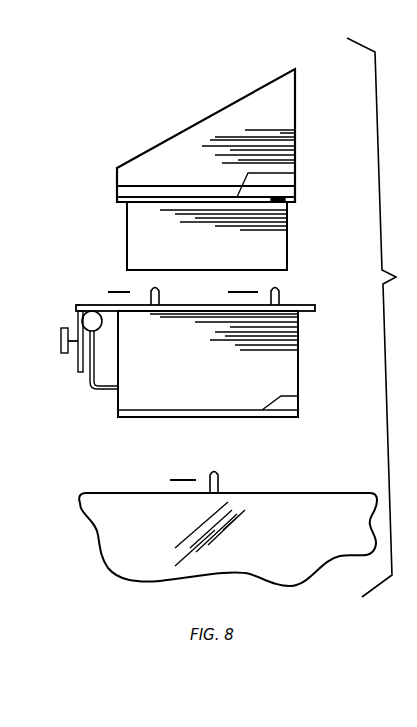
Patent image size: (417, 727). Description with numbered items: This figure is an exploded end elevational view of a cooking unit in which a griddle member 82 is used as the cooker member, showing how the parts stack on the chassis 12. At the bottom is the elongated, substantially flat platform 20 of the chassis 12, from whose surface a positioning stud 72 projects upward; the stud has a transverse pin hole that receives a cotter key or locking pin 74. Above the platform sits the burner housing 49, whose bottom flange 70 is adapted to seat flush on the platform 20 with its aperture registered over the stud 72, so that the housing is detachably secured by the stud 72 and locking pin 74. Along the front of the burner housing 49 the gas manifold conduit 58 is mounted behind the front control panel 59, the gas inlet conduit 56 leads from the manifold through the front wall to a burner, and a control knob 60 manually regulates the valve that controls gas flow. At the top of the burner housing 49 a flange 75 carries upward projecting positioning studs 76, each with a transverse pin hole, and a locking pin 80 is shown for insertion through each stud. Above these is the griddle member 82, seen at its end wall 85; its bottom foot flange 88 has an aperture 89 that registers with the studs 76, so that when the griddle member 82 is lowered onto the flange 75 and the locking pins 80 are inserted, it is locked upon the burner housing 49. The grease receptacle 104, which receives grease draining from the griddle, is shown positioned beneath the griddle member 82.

The chassis 12 is at (317, 545).
The platform 20 is at (300, 493).
The burner housing 49 is at (303, 373).
The gas inlet conduit 56 is at (90, 386).
The gas manifold conduit 58 is at (78, 305).
The front control panel 59 is at (78, 362).
The control knob 60 is at (60, 341).
The flange 70 is at (298, 396).
The positioning stud 72 is at (220, 484).
The locking pin 74 is at (185, 480).
The flange 75 is at (312, 312).
The positioning stud 76 is at (160, 297).
The locking pin 80 is at (128, 292).
The griddle member 82 is at (234, 135).
The end wall 85 is at (255, 126).
The bottom foot flange 88 is at (295, 173).
The aperture 89 is at (298, 207).
The grease receptacle 104 is at (218, 255).